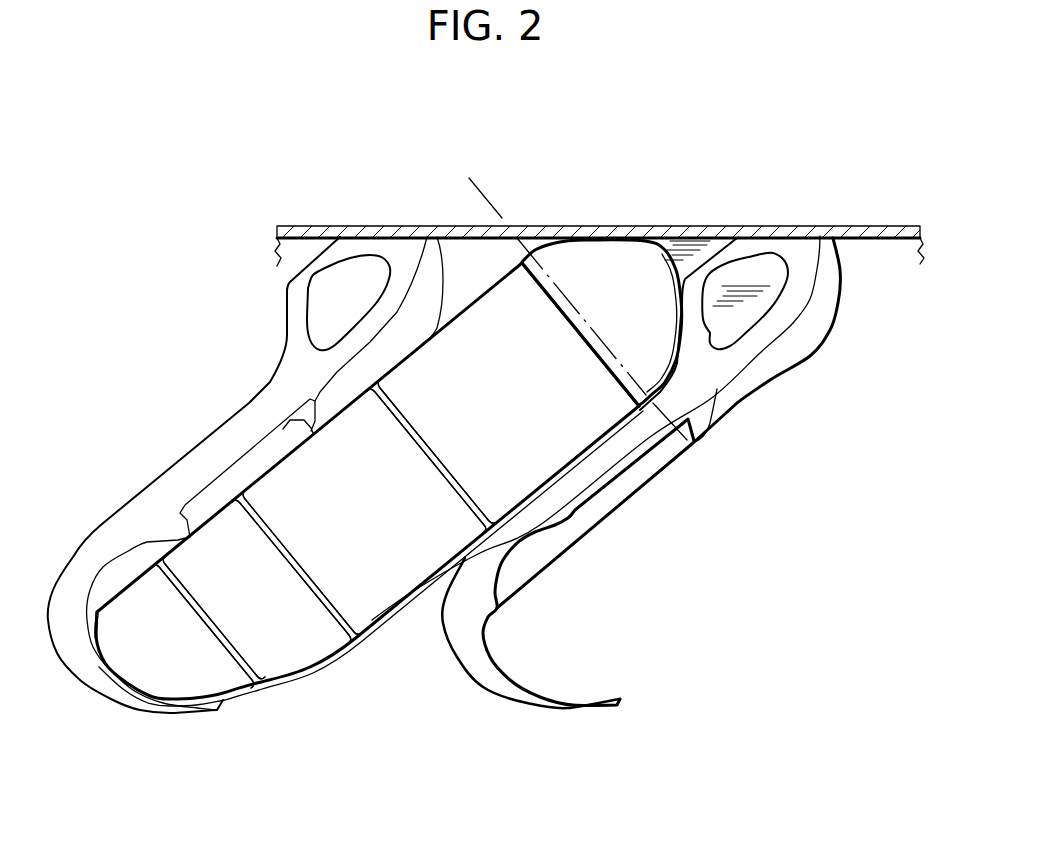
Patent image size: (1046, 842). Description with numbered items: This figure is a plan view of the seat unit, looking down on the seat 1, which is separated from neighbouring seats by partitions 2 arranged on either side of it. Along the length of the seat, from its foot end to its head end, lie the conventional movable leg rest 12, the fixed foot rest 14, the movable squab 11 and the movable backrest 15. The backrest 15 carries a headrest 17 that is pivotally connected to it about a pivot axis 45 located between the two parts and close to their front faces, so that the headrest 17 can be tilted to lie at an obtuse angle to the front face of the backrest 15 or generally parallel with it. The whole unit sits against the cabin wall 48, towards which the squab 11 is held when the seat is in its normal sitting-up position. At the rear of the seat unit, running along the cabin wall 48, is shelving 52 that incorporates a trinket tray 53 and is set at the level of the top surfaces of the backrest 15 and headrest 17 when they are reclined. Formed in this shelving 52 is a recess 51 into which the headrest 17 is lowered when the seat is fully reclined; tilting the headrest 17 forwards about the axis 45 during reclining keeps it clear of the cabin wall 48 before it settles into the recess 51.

The seat 1 is at (391, 539).
The partition 2 is at (448, 411).
The movable squab 11 is at (347, 524).
The movable leg rest 12 is at (239, 610).
The fixed foot rest 14 is at (146, 658).
The movable backrest 15 is at (490, 404).
The headrest 17 is at (603, 308).
The pivot axis 45 is at (479, 190).
The cabin wall 48 is at (873, 226).
The recess 51 is at (683, 248).
The shelving 52 is at (757, 246).
The trinket tray 53 is at (768, 268).